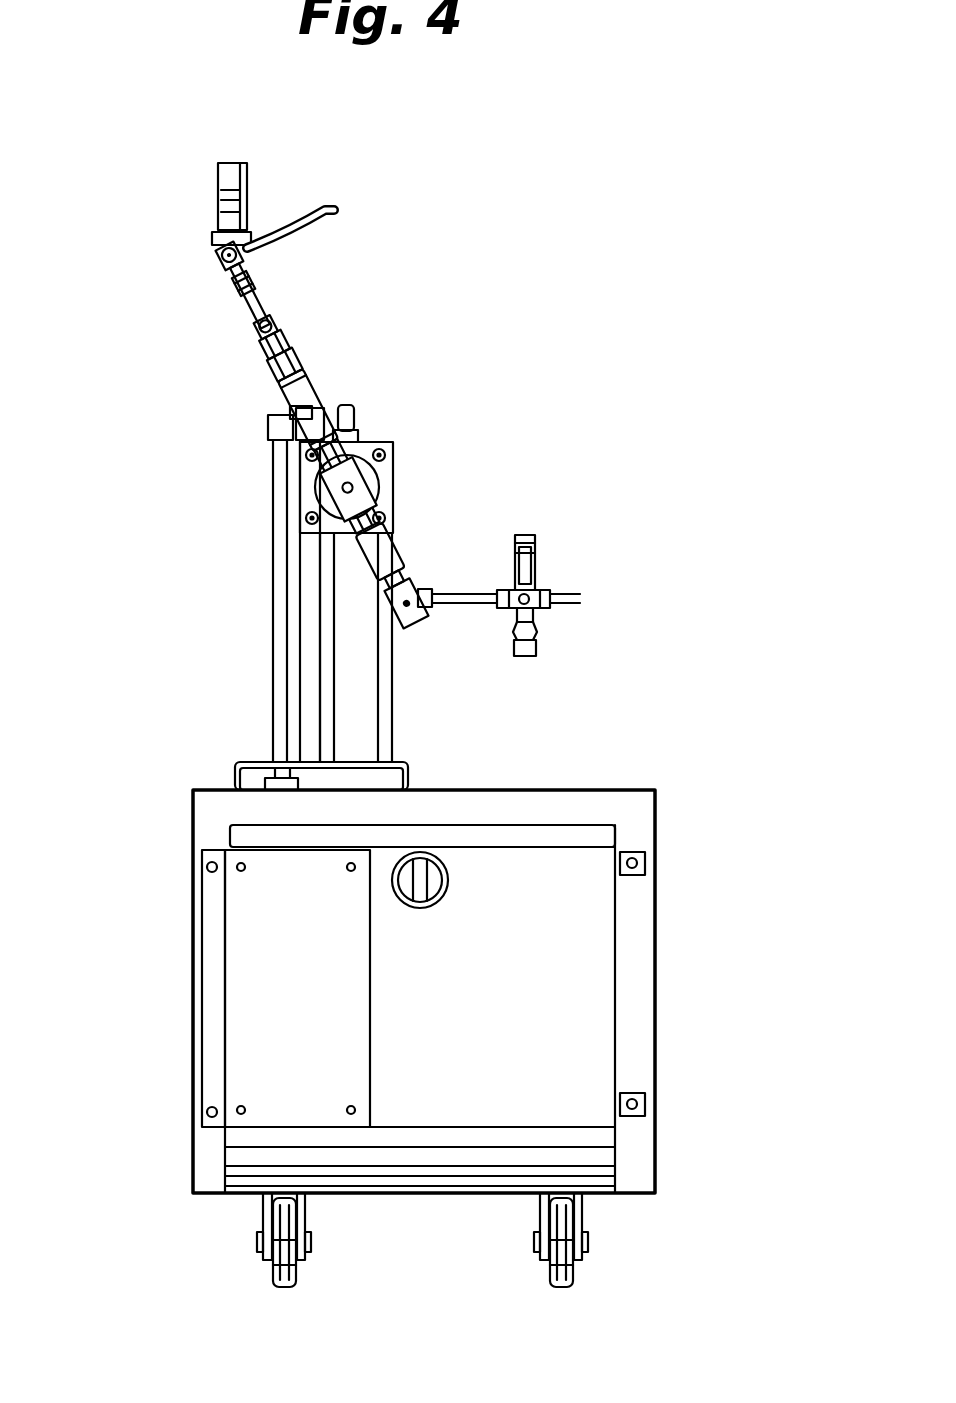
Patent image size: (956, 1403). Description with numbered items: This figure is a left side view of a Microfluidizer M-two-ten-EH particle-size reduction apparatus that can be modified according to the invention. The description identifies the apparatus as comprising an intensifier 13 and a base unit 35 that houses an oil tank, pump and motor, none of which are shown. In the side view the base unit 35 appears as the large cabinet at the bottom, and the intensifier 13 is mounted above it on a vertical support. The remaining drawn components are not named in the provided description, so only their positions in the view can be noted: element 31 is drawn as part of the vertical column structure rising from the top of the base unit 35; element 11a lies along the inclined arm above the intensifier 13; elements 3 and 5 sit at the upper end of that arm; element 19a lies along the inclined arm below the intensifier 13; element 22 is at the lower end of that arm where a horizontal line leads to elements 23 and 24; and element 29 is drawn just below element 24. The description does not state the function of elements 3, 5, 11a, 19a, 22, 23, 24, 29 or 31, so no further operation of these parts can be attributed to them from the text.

The grease gun 3 is at (175, 183).
The gun lever 5 is at (222, 262).
The upper swivel arm cylinder 11a is at (370, 379).
The intensifier 13 is at (416, 460).
The lower swivel arm cylinder 19a is at (459, 539).
The elbow coupling 22 is at (416, 660).
The supply pipe 23 is at (499, 662).
The valve 24 is at (597, 585).
The valve outlet fitting 29 is at (565, 684).
The support column 31 is at (223, 584).
The base unit 35 is at (504, 1038).